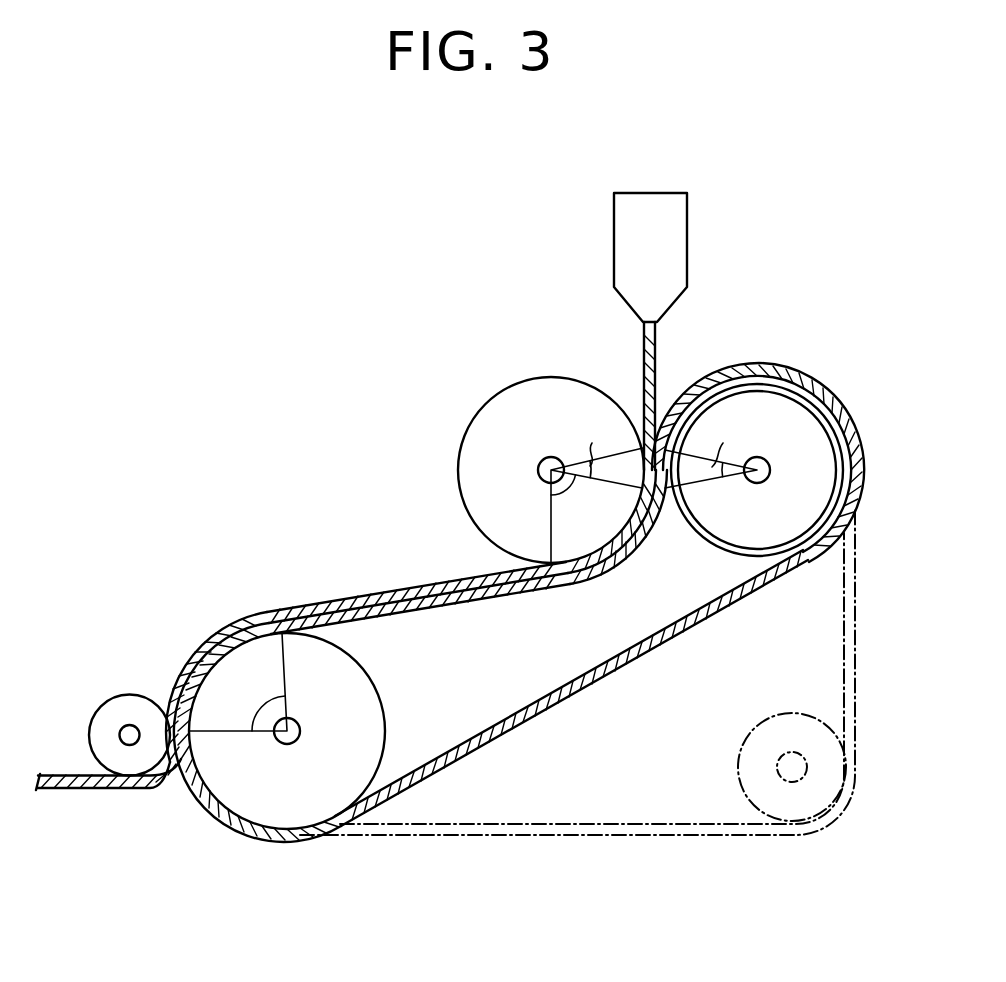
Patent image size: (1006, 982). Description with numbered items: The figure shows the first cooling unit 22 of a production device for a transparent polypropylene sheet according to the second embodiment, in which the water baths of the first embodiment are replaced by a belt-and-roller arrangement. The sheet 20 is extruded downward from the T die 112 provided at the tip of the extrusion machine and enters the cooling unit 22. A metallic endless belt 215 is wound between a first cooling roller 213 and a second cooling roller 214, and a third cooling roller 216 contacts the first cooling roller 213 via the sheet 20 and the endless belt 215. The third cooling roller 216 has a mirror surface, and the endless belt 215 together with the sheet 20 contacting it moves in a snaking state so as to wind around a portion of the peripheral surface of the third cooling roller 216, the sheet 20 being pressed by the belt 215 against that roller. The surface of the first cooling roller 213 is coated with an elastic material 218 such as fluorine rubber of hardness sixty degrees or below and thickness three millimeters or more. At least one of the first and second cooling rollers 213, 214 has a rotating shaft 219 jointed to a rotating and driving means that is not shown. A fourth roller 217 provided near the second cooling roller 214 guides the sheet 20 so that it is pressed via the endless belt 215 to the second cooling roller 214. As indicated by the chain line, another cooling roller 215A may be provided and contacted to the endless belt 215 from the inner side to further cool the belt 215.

The first cooling unit 22 is at (898, 229).
The T die 112 is at (675, 256).
The sheet 20 is at (657, 352).
The third cooling roller 216 is at (515, 413).
The first cooling roller 213 is at (813, 443).
The elastic material 218 is at (793, 378).
The rotating shaft 219 is at (770, 475).
The second cooling roller 214 is at (298, 790).
The fourth roller 217 is at (122, 715).
The metallic endless belt 215 is at (606, 690).
The cooling roller 215A is at (738, 760).